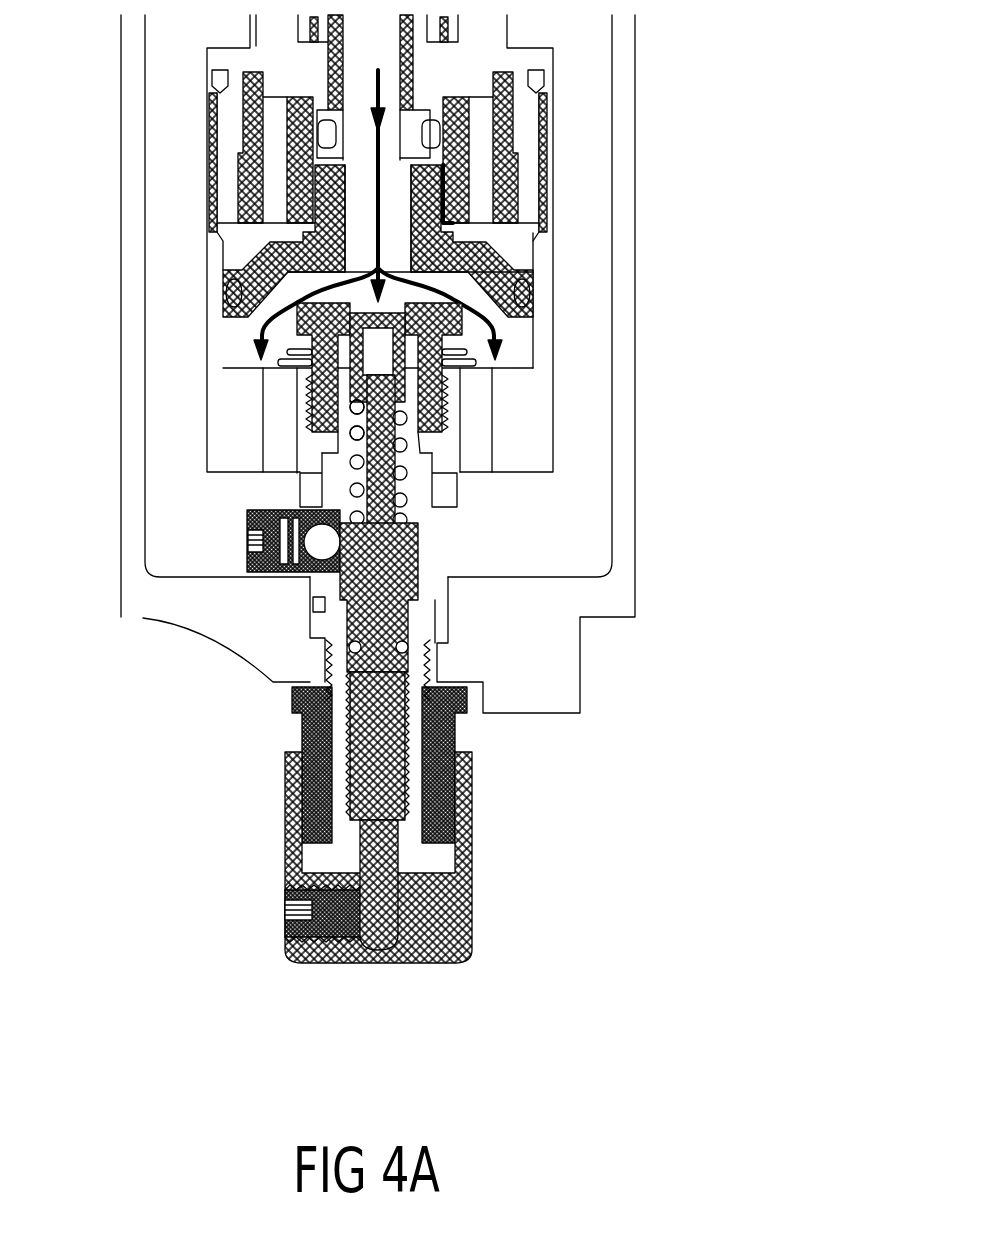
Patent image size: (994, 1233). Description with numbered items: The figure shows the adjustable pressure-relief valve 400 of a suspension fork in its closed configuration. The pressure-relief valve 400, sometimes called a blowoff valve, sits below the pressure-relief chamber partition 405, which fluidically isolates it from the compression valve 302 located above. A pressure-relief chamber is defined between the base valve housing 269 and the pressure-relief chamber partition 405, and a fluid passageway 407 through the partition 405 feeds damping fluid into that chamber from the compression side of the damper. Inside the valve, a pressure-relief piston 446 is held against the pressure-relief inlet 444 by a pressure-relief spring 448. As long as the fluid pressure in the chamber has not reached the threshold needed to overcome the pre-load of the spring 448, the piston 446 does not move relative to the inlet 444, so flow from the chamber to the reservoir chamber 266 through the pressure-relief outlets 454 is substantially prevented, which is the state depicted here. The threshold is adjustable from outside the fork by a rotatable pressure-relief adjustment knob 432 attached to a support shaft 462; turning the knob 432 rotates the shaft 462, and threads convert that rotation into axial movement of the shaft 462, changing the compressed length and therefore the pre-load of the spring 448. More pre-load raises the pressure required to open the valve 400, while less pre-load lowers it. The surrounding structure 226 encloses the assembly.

The housing 226 is at (637, 550).
The reservoir chamber 266 is at (535, 545).
The base valve housing 269 is at (532, 415).
The compression valve 302 is at (237, 181).
The pressure-relief valve 400 is at (455, 528).
The pressure-relief chamber partition 405 is at (480, 257).
The fluid passageway 407 is at (395, 208).
The pressure-relief adjustment knob 432 is at (297, 872).
The pressure-relief inlet 444 is at (365, 303).
The pressure-relief piston 446 is at (408, 383).
The pressure-relief spring 448 is at (355, 462).
The pressure-relief outlets 454 is at (317, 490).
The support shaft 462 is at (355, 428).